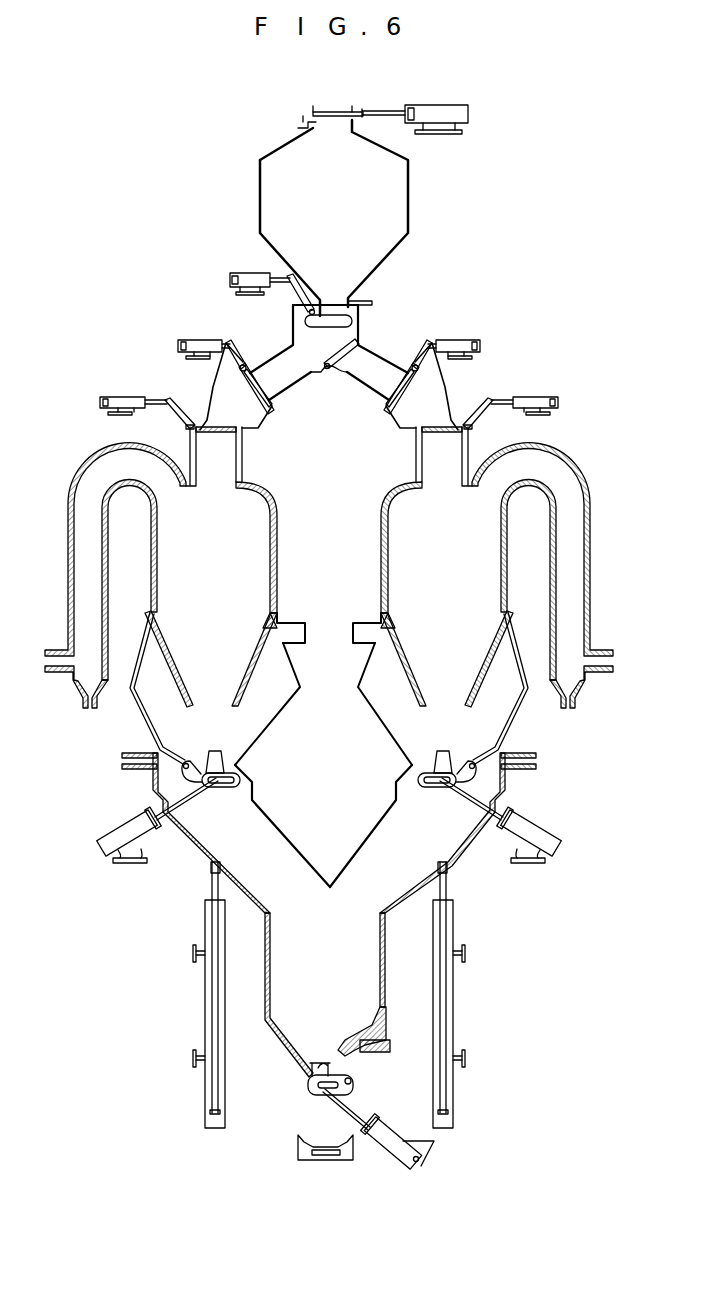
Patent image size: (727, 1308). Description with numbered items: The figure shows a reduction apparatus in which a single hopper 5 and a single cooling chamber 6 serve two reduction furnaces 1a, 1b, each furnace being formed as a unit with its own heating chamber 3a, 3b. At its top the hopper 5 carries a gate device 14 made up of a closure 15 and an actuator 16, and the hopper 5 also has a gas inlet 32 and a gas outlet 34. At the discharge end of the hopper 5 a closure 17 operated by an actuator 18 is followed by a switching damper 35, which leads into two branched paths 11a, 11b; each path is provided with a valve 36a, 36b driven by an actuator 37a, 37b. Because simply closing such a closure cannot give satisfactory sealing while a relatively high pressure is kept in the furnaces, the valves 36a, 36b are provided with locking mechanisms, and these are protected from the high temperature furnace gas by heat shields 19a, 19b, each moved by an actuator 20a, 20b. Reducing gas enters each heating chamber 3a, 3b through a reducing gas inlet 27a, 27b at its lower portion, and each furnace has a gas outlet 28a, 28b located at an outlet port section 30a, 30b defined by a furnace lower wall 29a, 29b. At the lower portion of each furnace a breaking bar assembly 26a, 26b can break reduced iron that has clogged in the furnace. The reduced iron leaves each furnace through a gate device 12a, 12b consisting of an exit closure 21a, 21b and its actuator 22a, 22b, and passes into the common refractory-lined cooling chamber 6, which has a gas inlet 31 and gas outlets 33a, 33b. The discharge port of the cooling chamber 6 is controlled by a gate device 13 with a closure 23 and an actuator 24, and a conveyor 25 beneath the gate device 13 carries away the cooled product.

The reduction furnace 1a is at (258, 562).
The reduction furnace 1b is at (385, 545).
The heating chamber 3a is at (68, 538).
The heating chamber 3b is at (590, 540).
The hopper 5 is at (405, 210).
The cooling chamber 6 is at (374, 960).
The branched path 11a is at (276, 356).
The branched path 11b is at (382, 362).
The gate device 12a is at (248, 780).
The gate device 12b is at (395, 785).
The gate device 13 is at (318, 1070).
The gate device 14 is at (302, 130).
The closure 15 is at (338, 112).
The actuator 16 is at (468, 113).
The closure 17 is at (333, 306).
The actuator 18 is at (233, 273).
The heat shield 19a is at (225, 433).
The heat shield 19b is at (442, 438).
The actuator 20a is at (113, 397).
The actuator 20b is at (548, 397).
The exit closure 21a is at (213, 790).
The exit closure 21b is at (430, 792).
The actuator 22a is at (103, 847).
The actuator 22b is at (553, 847).
The closure 23 is at (336, 1096).
The actuator 24 is at (401, 1131).
The conveyor 25 is at (298, 1150).
The breaking bar assembly 26a is at (205, 1027).
The breaking bar assembly 26b is at (453, 1007).
The reducing gas inlet 27a is at (50, 650).
The reducing gas inlet 27b is at (609, 650).
The gas outlet 28a is at (300, 623).
The gas outlet 28b is at (356, 651).
The furnace lower wall 29a is at (280, 700).
The furnace lower wall 29b is at (407, 688).
The outlet port section 30a is at (200, 643).
The outlet port section 30b is at (486, 660).
The gas inlet 31 is at (383, 1053).
The gas inlet 32 is at (372, 303).
The gas outlet 33a is at (128, 768).
The gas outlet 33b is at (530, 768).
The gas outlet 34 is at (303, 118).
The switching damper 35 is at (327, 372).
The valve 36a is at (250, 418).
The valve 36b is at (410, 418).
The actuator 37a is at (190, 340).
The actuator 37b is at (470, 340).